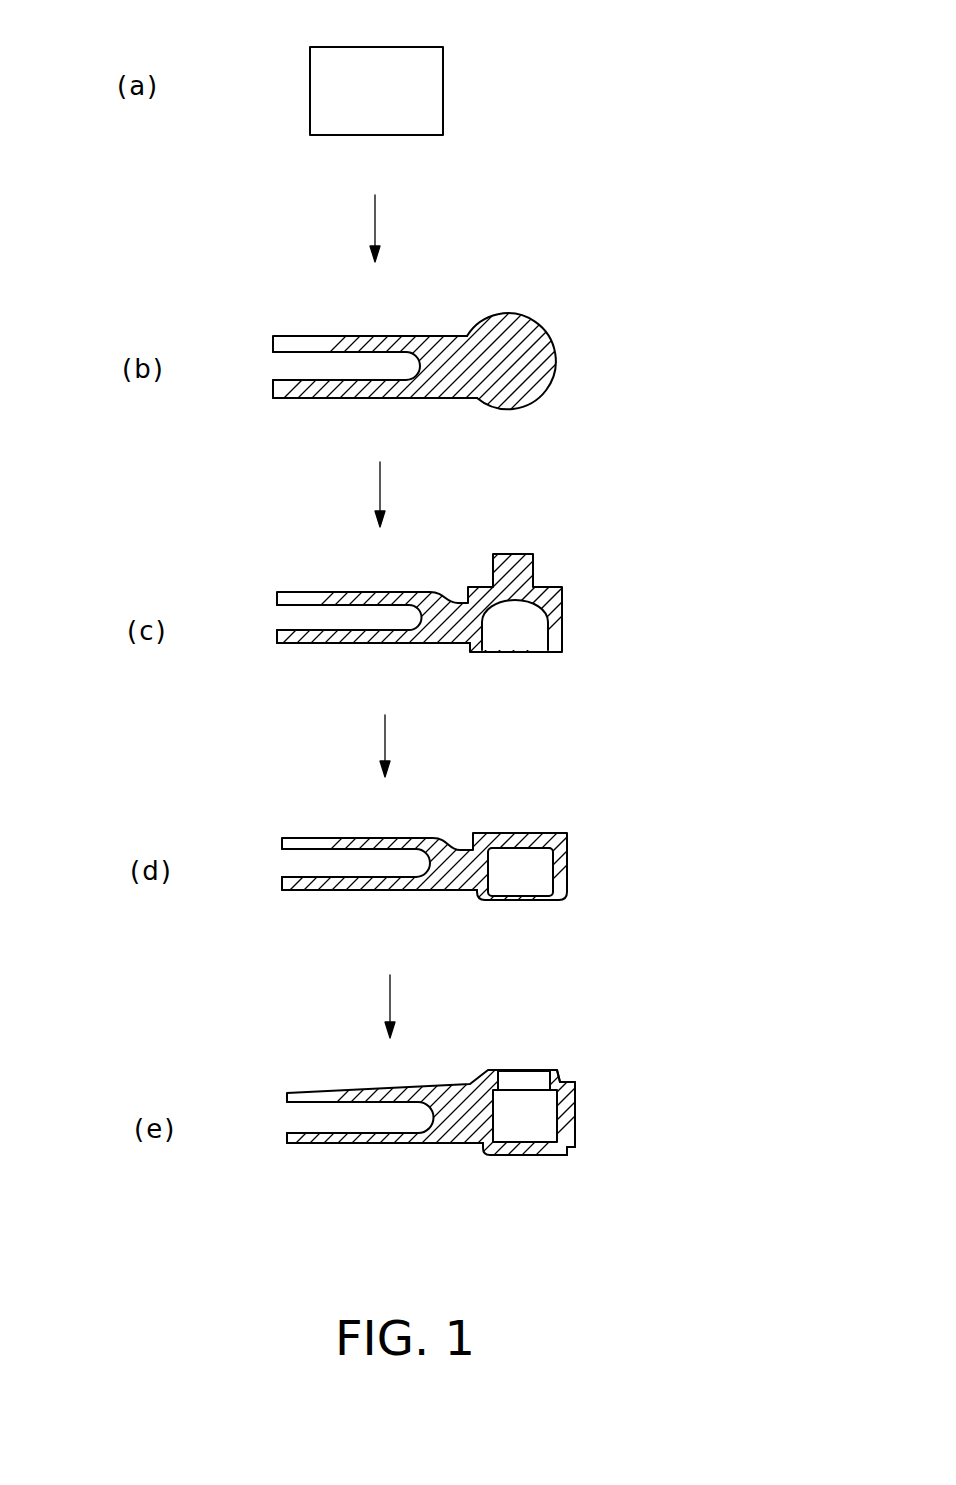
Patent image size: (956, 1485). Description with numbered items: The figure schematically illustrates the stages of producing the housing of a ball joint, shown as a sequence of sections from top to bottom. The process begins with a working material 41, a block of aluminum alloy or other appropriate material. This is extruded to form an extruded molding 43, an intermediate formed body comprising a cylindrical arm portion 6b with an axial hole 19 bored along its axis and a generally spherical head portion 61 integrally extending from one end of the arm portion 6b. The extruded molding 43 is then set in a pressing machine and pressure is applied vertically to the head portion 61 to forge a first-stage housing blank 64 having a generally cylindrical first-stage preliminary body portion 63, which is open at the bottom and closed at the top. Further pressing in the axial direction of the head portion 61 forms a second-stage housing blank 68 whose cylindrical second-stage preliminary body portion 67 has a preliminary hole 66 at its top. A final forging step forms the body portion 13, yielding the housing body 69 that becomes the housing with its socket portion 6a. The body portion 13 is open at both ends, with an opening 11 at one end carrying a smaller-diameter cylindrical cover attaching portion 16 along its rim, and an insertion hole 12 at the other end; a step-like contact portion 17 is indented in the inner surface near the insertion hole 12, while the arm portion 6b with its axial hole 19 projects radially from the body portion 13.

The working material 41 is at (443, 85).
The extruded molding 43 is at (565, 355).
The head portion 61 is at (537, 385).
The axial hole 19 is at (330, 380).
The arm portion 6b is at (387, 385).
The first-stage housing blank 64 is at (573, 603).
The first-stage preliminary body portion 63 is at (560, 647).
The second-stage housing blank 68 is at (585, 810).
The second-stage preliminary body portion 67 is at (562, 868).
The preliminary hole 66 is at (523, 845).
The housing body 69 is at (612, 1112).
The opening 11 is at (548, 1072).
The cover attaching portion 16 is at (560, 1073).
The socket portion 6a is at (575, 1100).
The body portion 13 is at (572, 1130).
The insertion hole 12 is at (543, 1143).
The contact portion 17 is at (555, 1157).